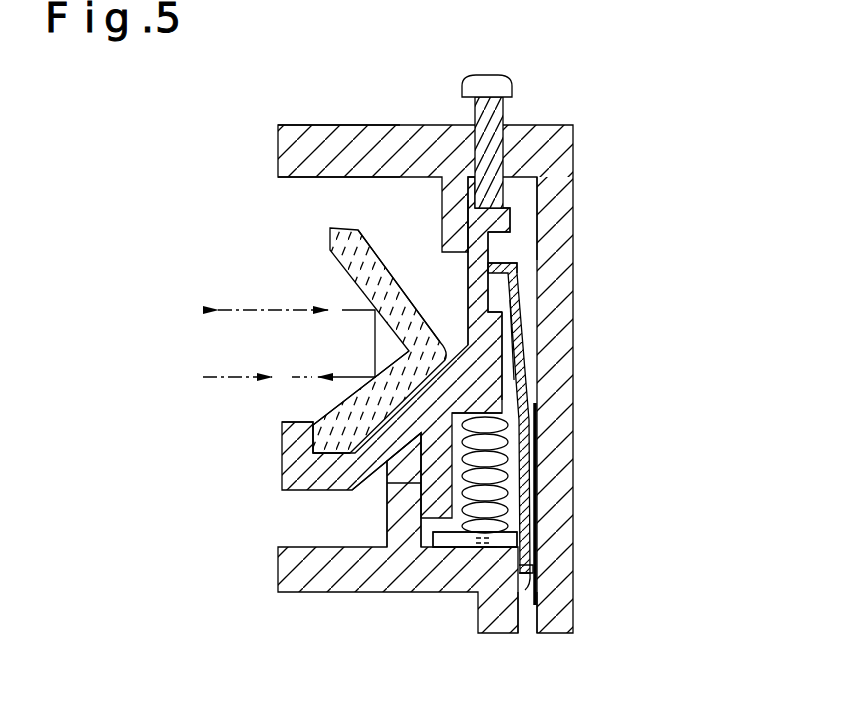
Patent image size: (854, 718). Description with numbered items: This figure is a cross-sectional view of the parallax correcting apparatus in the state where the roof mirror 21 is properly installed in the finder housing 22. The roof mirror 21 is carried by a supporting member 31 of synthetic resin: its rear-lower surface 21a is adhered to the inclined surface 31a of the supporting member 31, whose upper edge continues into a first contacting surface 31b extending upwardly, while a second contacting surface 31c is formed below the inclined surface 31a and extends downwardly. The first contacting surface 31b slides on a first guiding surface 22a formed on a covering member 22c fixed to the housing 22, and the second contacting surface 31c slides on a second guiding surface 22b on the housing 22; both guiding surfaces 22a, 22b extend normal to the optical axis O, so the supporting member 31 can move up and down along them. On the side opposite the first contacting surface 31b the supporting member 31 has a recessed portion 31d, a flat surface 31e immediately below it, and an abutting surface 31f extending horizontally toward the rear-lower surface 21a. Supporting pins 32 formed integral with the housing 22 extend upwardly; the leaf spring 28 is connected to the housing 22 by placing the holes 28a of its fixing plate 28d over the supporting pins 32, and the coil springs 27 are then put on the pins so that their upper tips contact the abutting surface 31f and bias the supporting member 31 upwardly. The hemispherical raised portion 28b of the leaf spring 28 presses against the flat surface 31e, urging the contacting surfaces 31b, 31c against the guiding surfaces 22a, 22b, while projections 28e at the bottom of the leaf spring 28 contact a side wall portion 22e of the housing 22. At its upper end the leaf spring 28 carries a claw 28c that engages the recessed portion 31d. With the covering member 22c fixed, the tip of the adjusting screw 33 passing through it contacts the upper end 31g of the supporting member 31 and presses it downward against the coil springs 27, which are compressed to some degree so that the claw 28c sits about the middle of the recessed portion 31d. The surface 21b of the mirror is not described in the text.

The roof mirror 21 is at (311, 250).
The rear-lower surface 21a is at (345, 408).
The lever edge 21b is at (356, 296).
The housing 22 is at (392, 596).
The first guiding surface 22a is at (538, 193).
The second guiding surface 22b is at (398, 523).
The covering member 22c is at (298, 141).
The side wall portion 22e is at (525, 600).
The coil springs 27 is at (508, 490).
The leaf spring 28 is at (538, 404).
The holes 28a is at (537, 592).
The raised portion 28b is at (512, 342).
The claw 28c is at (518, 268).
The fixing plate 28d is at (445, 535).
The projections 28e is at (534, 571).
The supporting member 31 is at (279, 467).
The inclined surface 31a is at (283, 432).
The first contacting surface 31b is at (467, 290).
The second contacting surface 31c is at (374, 471).
The recessed portion 31d is at (490, 247).
The flat surface 31e is at (502, 380).
The abutting surface 31f is at (533, 437).
The upper end 31g is at (507, 210).
The supporting pins 32 is at (476, 546).
The adjusting screw 33 is at (497, 112).
The optical axis O is at (232, 378).